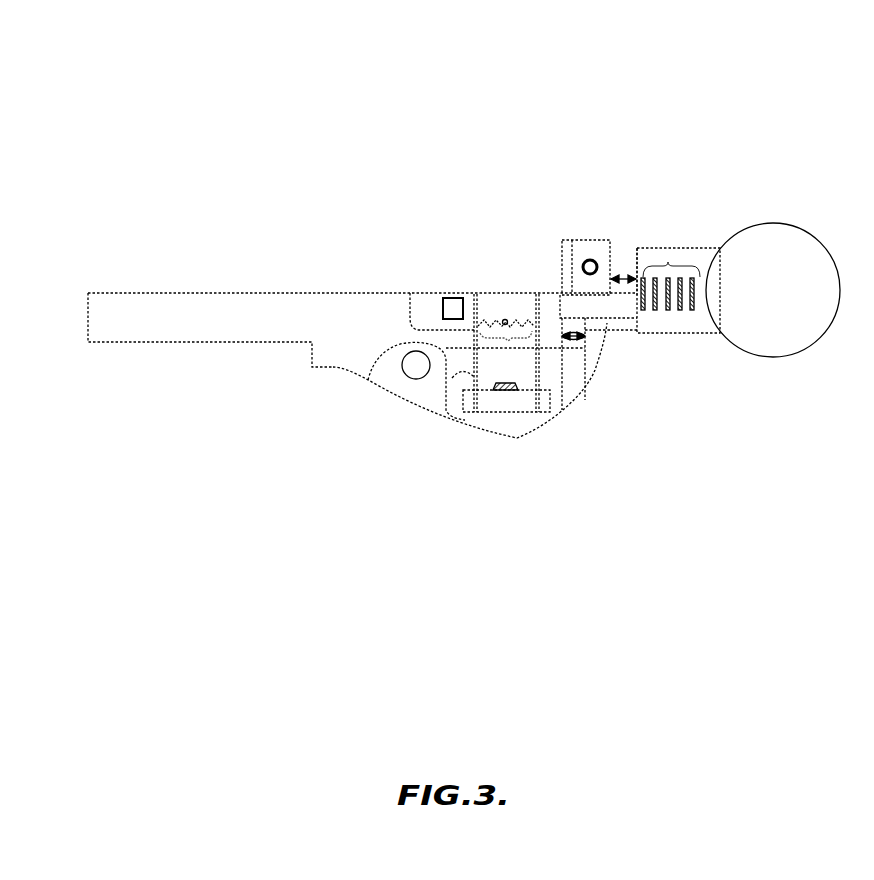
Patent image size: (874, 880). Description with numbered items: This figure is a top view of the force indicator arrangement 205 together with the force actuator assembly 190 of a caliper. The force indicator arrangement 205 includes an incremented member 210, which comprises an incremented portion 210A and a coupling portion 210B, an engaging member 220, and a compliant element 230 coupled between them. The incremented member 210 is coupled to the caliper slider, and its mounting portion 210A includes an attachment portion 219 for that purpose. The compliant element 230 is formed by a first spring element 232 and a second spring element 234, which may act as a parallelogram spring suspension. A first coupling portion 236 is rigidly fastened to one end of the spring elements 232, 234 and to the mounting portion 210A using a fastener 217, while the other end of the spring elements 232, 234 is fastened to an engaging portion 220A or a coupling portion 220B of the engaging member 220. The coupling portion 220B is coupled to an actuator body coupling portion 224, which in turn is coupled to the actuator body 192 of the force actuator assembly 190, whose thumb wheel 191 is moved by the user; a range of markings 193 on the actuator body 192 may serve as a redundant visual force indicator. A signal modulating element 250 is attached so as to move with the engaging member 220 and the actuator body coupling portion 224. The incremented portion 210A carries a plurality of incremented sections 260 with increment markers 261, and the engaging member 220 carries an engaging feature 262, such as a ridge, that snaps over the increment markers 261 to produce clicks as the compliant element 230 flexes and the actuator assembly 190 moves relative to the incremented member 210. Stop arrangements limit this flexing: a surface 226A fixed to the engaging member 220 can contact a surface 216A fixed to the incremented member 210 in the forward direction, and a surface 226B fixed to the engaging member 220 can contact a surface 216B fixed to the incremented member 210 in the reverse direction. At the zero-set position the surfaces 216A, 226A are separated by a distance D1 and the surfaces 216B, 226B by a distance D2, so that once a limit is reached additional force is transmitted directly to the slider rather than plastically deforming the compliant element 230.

The force indicator arrangement 205 is at (366, 92).
The incremented member 210 is at (245, 388).
The incremented portion 210A is at (400, 338).
The coupling portion 210B is at (375, 330).
The first spring element 232 is at (462, 377).
The signal modulating element 250 is at (453, 297).
The increment markers 261 is at (502, 318).
The engaging feature 262 is at (503, 310).
The engaging member 220 is at (470, 186).
The engaging portion 220A is at (525, 295).
The coupling portion 220B is at (550, 293).
The distance D2 is at (554, 293).
The attachment portion 219 is at (592, 240).
The surface 216A is at (615, 262).
The surface 226A is at (624, 285).
The compliant element 230 is at (560, 380).
The surface 216B is at (573, 350).
The surface 226B is at (587, 350).
The actuator body coupling portion 224 is at (590, 345).
The distance D1 is at (588, 337).
The second spring element 234 is at (542, 369).
The fastener 217 is at (513, 392).
The first coupling portion 236 is at (510, 396).
The incremented sections 260 is at (525, 337).
The force actuator assembly 190 is at (834, 397).
The actuator body 192 is at (700, 334).
The markings 193 is at (668, 262).
The thumb wheel 191 is at (808, 357).